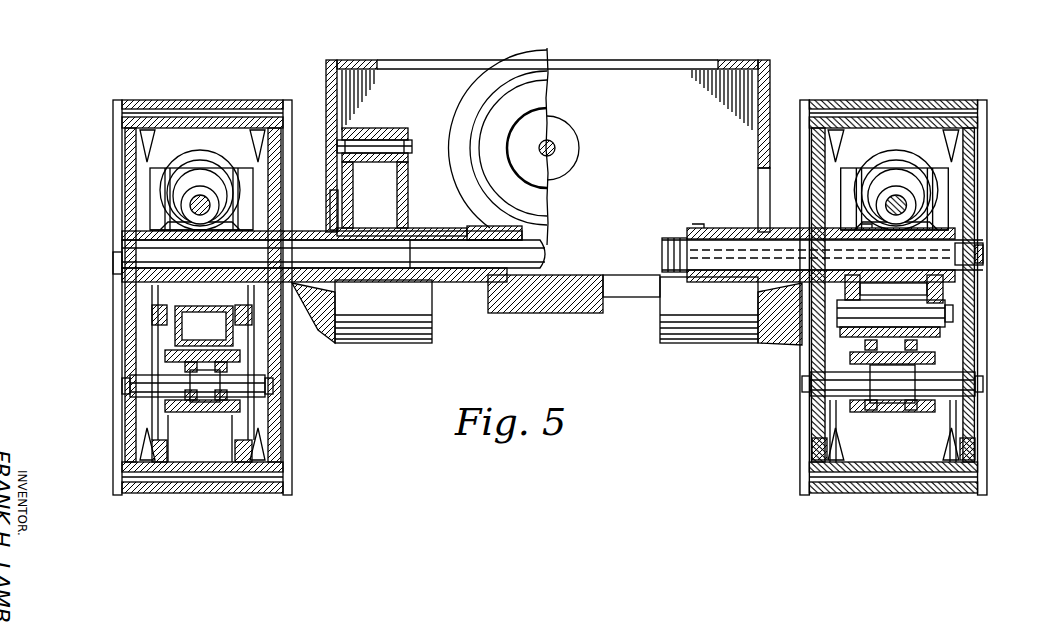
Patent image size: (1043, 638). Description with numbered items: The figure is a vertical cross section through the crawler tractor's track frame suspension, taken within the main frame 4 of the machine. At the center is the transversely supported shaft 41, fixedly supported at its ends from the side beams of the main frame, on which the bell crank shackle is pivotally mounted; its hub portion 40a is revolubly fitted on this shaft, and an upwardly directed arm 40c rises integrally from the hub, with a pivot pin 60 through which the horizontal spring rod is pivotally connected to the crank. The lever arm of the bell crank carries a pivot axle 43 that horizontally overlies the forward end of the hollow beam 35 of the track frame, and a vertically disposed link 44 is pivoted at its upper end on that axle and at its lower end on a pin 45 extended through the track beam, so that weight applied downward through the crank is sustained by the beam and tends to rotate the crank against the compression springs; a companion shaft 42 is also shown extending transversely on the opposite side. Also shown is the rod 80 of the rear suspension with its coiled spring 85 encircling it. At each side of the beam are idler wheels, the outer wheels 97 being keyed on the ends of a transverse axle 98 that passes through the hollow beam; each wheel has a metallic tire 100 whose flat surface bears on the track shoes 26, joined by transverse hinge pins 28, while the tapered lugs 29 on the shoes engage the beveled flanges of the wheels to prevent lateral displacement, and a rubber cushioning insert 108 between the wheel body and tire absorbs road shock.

The housing 4 is at (362, 62).
The track shoe 26 is at (168, 102).
The transverse hinge pin 28 is at (216, 102).
The tapered lug 29 is at (130, 142).
The hollow beam 35 is at (205, 414).
The hub portion 40a is at (436, 230).
The upwardly directed arm 40c is at (410, 165).
The transversely supported shaft 41 is at (440, 260).
The shaft 42 is at (758, 230).
The pivot axle 43 is at (720, 270).
The vertically disposed link 44 is at (945, 300).
The pin 45 is at (920, 312).
The pivot pin 60 is at (380, 142).
The rod 80 is at (172, 215).
The coiled spring 85 is at (185, 190).
The outer idler wheel 97 is at (122, 357).
The transverse axle 98 is at (128, 387).
The metallic tire 100 is at (128, 325).
The rubber cushioning insert 108 is at (150, 308).